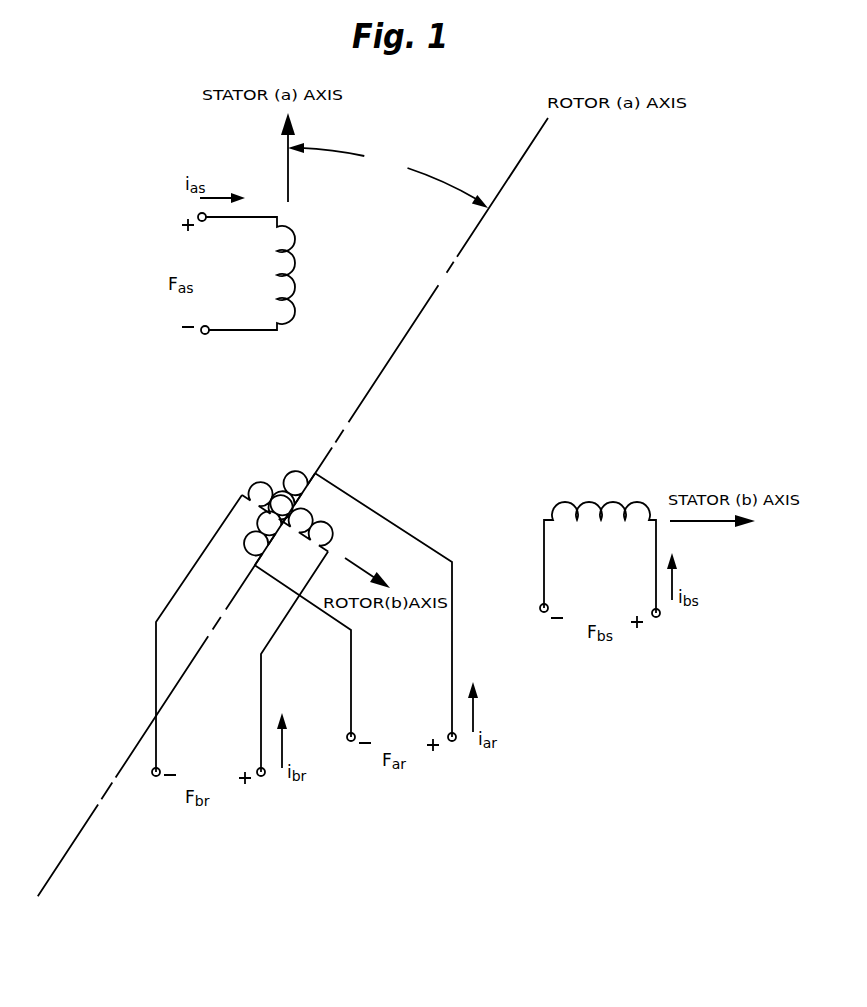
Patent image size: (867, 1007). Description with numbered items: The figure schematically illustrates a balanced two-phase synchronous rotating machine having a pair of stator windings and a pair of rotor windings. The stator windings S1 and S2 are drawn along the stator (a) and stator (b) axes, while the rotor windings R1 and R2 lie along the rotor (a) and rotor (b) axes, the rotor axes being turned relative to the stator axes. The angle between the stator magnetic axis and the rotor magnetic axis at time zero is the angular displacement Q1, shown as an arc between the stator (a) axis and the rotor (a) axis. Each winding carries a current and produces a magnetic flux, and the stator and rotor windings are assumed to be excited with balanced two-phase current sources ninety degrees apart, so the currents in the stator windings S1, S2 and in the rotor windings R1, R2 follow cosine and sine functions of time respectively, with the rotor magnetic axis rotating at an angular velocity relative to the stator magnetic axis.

The stator winding S1 is at (296, 287).
The stator winding S2 is at (617, 503).
The rotor winding R1 is at (291, 479).
The rotor winding R2 is at (261, 483).
The angular displacement Q1 is at (388, 175).